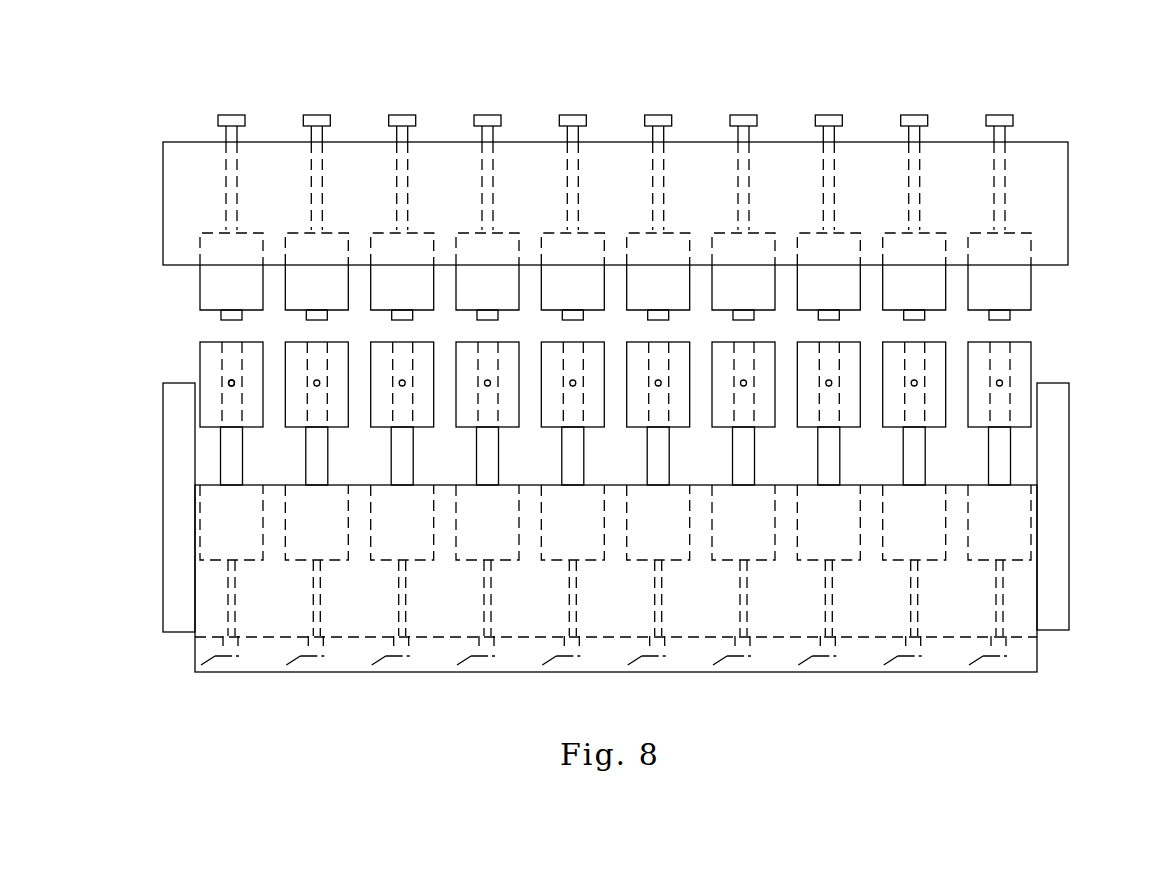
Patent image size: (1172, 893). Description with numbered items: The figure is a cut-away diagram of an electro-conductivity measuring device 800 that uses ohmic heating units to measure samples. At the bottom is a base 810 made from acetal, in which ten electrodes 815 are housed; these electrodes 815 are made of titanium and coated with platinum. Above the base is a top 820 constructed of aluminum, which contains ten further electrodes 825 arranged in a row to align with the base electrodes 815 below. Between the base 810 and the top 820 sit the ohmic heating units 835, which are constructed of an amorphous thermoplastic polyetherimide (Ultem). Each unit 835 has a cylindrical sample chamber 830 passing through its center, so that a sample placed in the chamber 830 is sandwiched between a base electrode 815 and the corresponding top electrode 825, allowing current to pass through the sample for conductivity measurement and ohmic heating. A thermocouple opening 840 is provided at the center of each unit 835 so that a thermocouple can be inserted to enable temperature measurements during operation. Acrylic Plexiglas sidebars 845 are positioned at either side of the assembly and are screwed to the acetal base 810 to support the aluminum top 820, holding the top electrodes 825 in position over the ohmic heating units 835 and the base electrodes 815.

The electro-conductivity measuring device 800 is at (1098, 128).
The base 810 is at (213, 612).
The electrodes 815 is at (218, 533).
The top 820 is at (178, 177).
The electrodes 825 is at (210, 300).
The sample chamber 830 is at (1013, 383).
The ohmic heating unit 835 is at (1032, 345).
The thermocouple opening 840 is at (230, 380).
The sidebars 845 is at (175, 472).